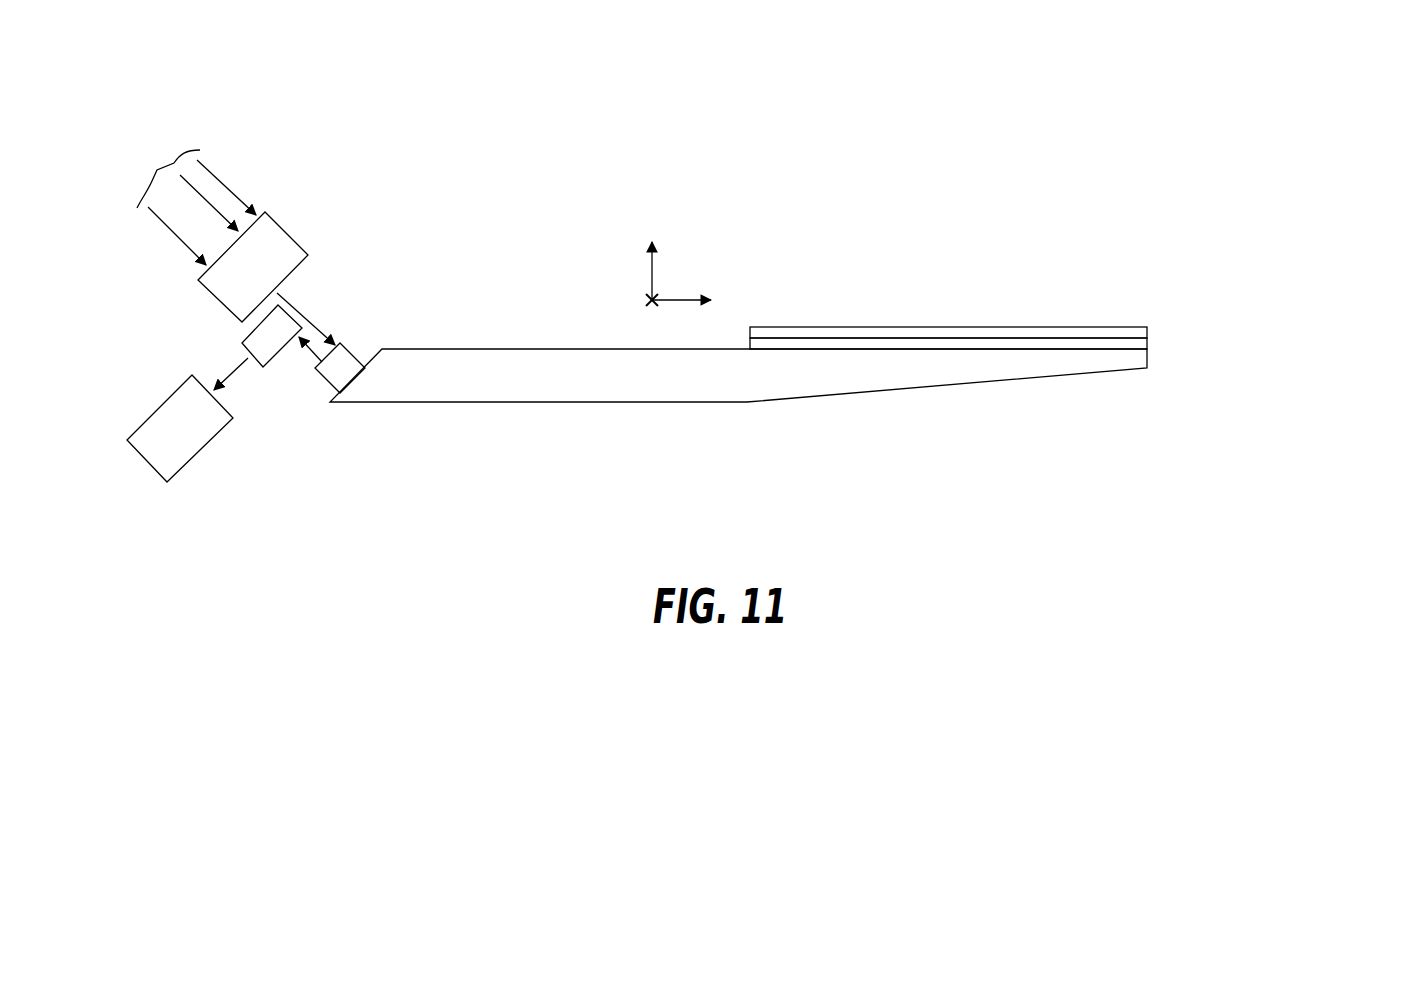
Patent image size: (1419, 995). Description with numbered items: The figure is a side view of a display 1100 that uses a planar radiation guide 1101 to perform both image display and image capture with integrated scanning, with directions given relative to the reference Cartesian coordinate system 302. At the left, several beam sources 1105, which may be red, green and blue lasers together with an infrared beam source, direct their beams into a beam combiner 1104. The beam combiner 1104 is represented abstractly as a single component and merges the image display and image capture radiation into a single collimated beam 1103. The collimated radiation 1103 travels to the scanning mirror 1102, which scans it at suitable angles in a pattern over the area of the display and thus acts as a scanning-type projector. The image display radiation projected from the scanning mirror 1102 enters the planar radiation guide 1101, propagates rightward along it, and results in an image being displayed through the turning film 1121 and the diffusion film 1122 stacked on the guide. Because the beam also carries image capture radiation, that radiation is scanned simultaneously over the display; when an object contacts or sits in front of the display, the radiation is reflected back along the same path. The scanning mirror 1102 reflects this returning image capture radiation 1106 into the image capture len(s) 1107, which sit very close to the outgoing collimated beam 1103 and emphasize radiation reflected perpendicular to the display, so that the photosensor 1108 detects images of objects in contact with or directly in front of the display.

The display 1100 is at (585, 215).
The reference Cartesian coordinate system 302 is at (680, 297).
The planar radiation guide 1101 is at (565, 390).
The scanning mirror 1102 is at (320, 388).
The collimated radiation 1103 is at (305, 317).
The beam combiner 1104 is at (292, 232).
The beam sources 1105 is at (158, 170).
The image capture radiation 1106 is at (305, 353).
The image capture len(s) 1107 is at (242, 340).
The photosensor 1108 is at (145, 460).
The turning film 1121 is at (1148, 342).
The diffusion film 1122 is at (1148, 333).